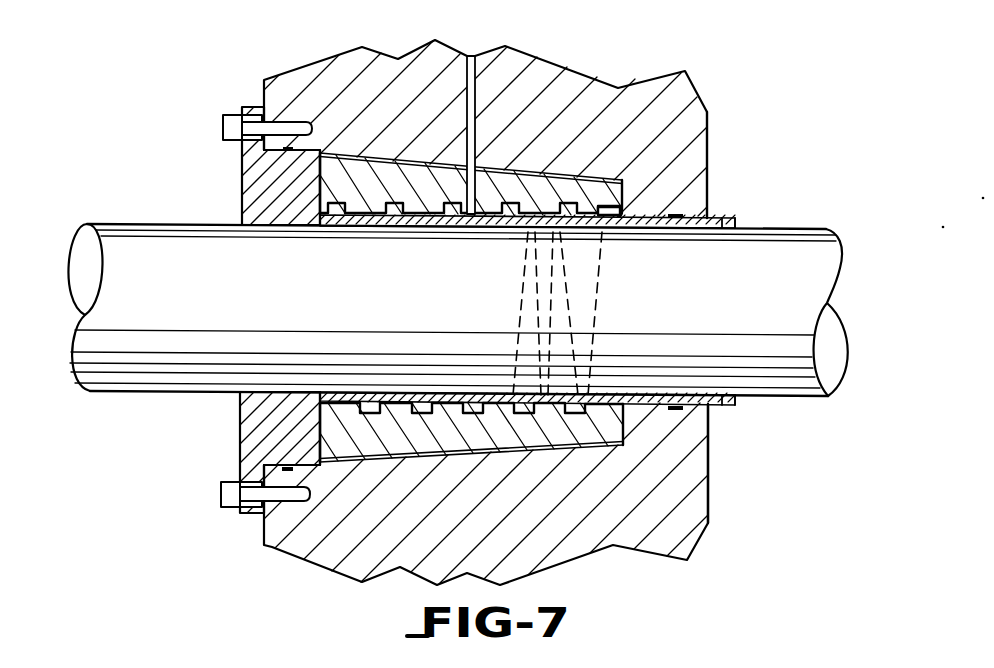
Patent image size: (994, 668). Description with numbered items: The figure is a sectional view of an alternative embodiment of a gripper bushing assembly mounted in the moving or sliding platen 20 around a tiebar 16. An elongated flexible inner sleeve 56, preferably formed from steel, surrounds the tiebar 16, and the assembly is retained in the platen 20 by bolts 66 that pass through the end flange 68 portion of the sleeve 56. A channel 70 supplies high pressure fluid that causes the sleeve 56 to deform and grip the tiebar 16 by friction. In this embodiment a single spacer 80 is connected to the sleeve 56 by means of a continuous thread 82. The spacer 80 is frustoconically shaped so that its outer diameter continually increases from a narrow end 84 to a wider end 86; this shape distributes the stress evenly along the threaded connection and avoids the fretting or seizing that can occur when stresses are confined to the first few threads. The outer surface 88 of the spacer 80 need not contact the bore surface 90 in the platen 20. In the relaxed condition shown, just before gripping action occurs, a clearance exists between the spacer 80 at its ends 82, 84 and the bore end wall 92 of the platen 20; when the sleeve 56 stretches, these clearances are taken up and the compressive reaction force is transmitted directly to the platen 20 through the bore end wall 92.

The tiebar 16 is at (432, 326).
The platen 20 is at (665, 92).
The sleeve 56 is at (727, 216).
The bolts 66 is at (222, 127).
The end flange 68 is at (262, 152).
The channel 70 is at (476, 112).
The spacer 80 is at (710, 112).
The continuous thread 82 is at (596, 283).
The narrow end 84 is at (625, 194).
The wider end 86 is at (318, 174).
The outer surface 88 is at (616, 192).
The bore surface 90 is at (508, 170).
The bore end wall 92 is at (623, 213).